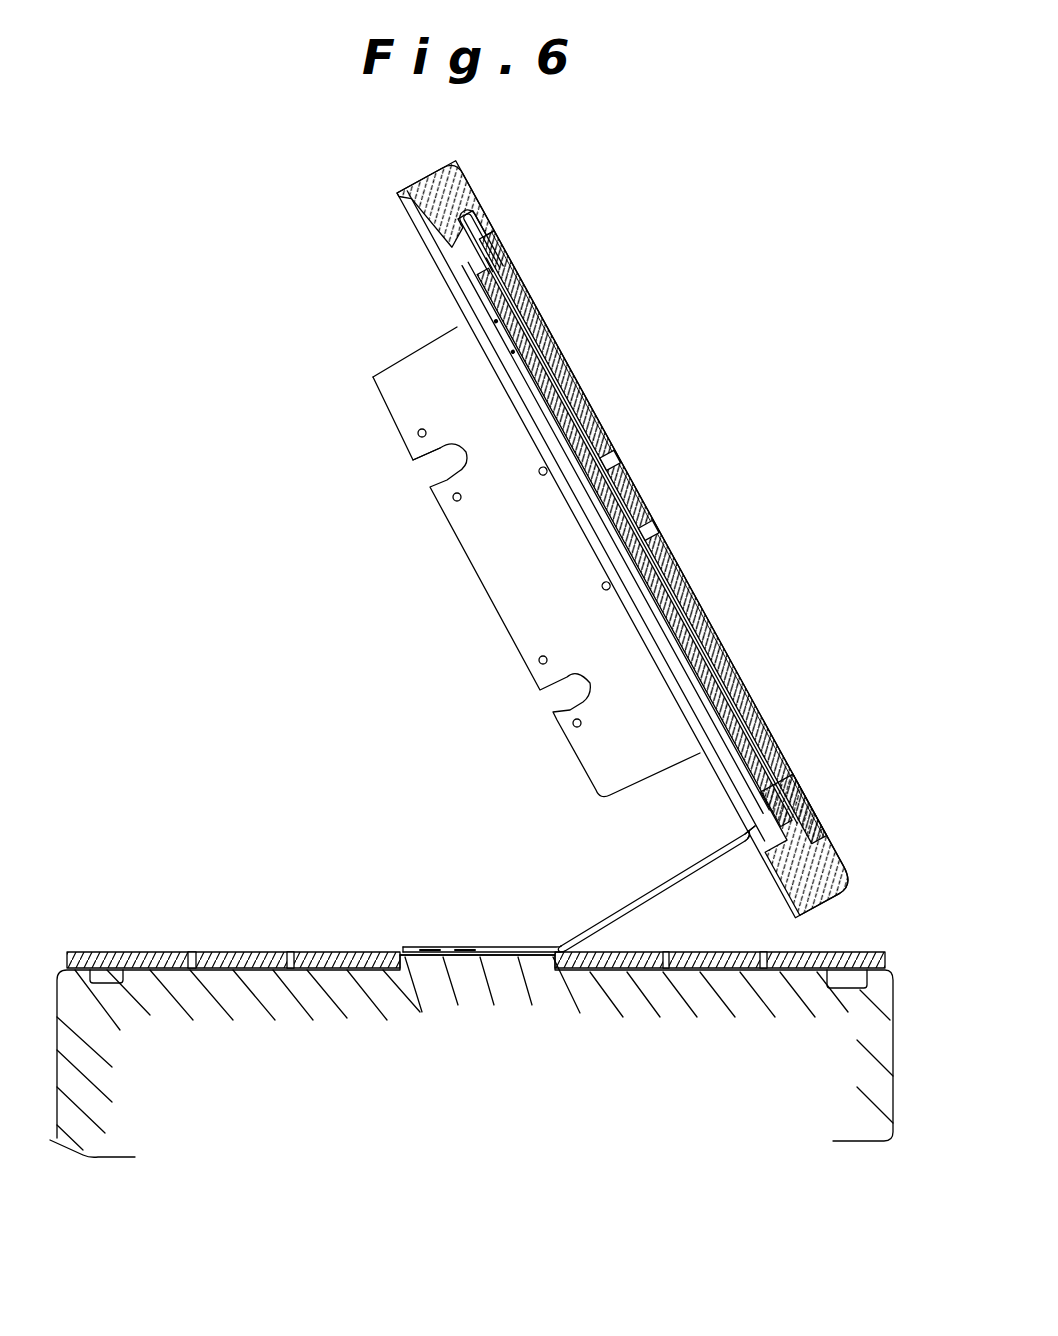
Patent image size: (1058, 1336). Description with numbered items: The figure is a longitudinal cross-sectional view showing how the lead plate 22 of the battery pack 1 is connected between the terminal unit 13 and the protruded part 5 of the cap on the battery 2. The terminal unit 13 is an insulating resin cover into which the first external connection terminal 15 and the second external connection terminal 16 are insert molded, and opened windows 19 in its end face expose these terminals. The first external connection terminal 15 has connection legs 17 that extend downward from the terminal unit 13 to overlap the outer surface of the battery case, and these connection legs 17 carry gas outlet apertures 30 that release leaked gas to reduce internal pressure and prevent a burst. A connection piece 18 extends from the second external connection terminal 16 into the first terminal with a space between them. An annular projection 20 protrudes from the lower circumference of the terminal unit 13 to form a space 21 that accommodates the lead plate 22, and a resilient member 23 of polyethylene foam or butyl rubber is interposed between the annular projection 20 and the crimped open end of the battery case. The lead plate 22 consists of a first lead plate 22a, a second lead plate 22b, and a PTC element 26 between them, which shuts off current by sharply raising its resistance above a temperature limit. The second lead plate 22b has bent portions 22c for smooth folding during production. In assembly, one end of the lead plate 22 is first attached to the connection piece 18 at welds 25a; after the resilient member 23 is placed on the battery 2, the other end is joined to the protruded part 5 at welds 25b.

The battery pack 1 is at (725, 446).
The battery 2 is at (404, 1127).
The protruded part 5 is at (480, 958).
The terminal unit 13 is at (450, 197).
The first external connection terminal 15 is at (580, 400).
The second external connection terminal 16 is at (497, 250).
The connection legs 17 is at (495, 555).
The connection piece 18 is at (493, 300).
The opened windows 19 is at (510, 277).
The annular projection 20 is at (460, 243).
The space 21 is at (503, 372).
The lead plate 22 is at (630, 890).
The first lead plate 22a is at (413, 460).
The second lead plate 22b is at (612, 905).
The bent portions 22c is at (758, 828).
The resilient member 23 is at (113, 950).
The welds 25a is at (503, 360).
The welds 25b is at (470, 947).
The PTC element 26 is at (606, 588).
The gas outlet apertures 30 is at (633, 488).